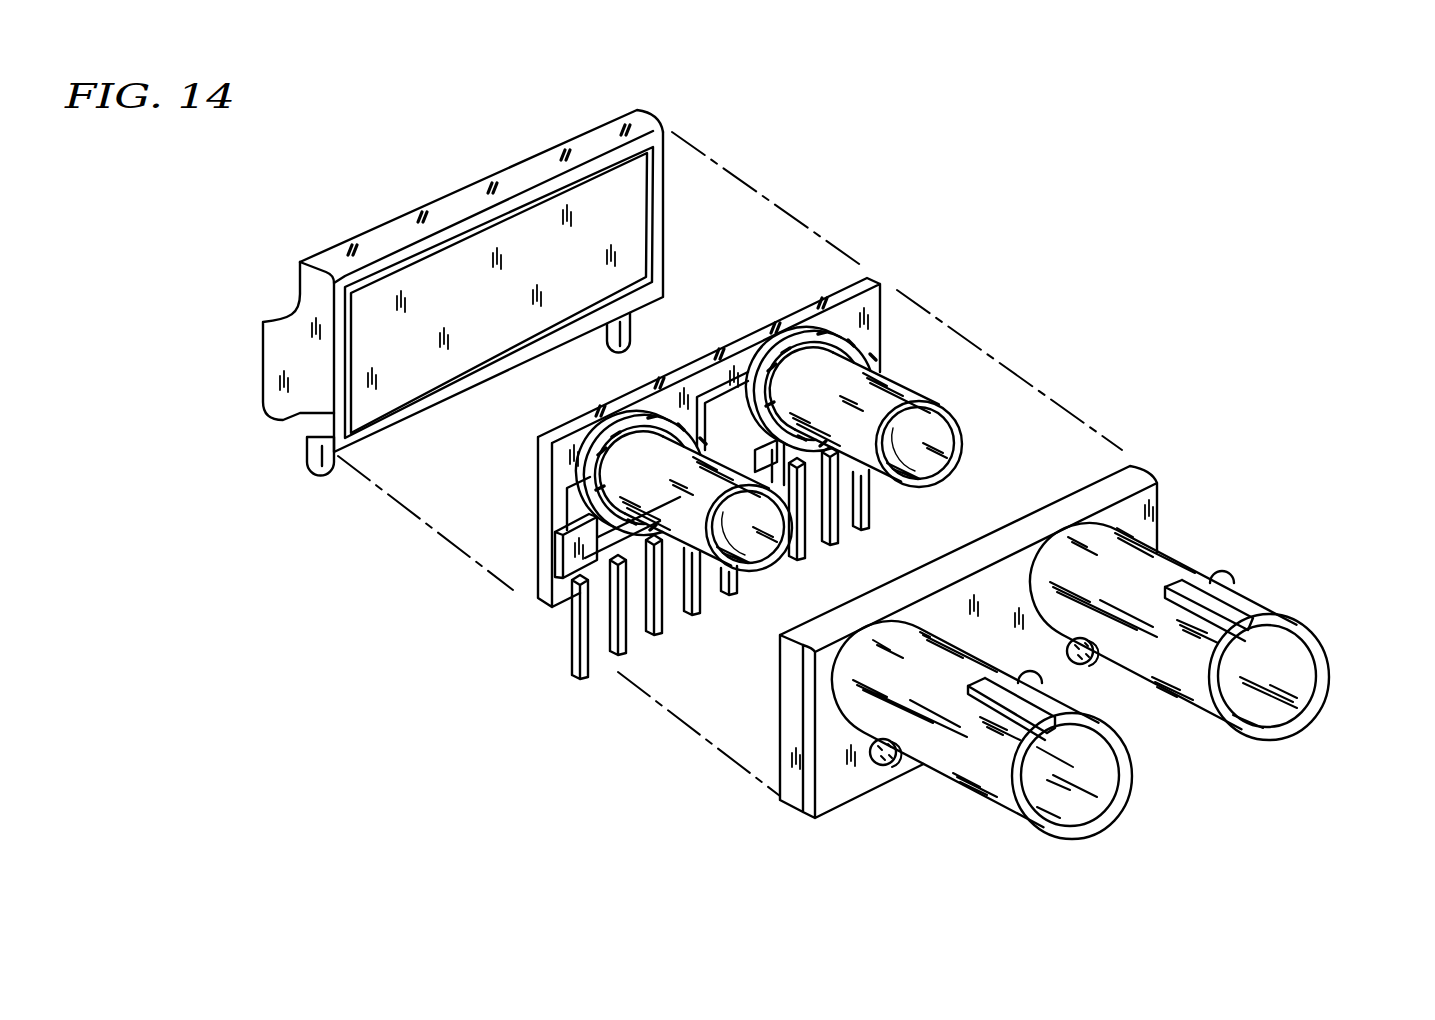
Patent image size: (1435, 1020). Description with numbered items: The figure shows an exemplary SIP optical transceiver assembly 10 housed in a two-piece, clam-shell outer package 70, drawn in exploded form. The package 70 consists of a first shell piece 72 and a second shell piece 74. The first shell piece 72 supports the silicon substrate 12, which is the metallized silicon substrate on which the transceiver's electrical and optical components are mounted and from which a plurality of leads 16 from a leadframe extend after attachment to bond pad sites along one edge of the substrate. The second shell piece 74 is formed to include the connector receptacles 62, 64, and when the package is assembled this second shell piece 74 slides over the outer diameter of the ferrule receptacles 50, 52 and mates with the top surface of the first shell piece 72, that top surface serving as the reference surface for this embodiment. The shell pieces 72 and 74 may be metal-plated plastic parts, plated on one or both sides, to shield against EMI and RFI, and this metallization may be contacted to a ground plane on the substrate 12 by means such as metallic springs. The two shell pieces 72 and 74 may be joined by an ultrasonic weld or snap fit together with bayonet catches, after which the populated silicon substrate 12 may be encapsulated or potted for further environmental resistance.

The optical assembly 10 is at (1079, 626).
The silicon substrate 12 is at (879, 338).
The leads 16 is at (575, 694).
The ferrule receptacles 50 is at (760, 570).
The ferrule receptacles 52 is at (962, 440).
The connector receptacles 62 is at (1132, 778).
The connector receptacles 64 is at (1330, 678).
The two-piece outer package 70 is at (305, 416).
The first shell piece 72 is at (664, 219).
The second shell piece 74 is at (1128, 466).